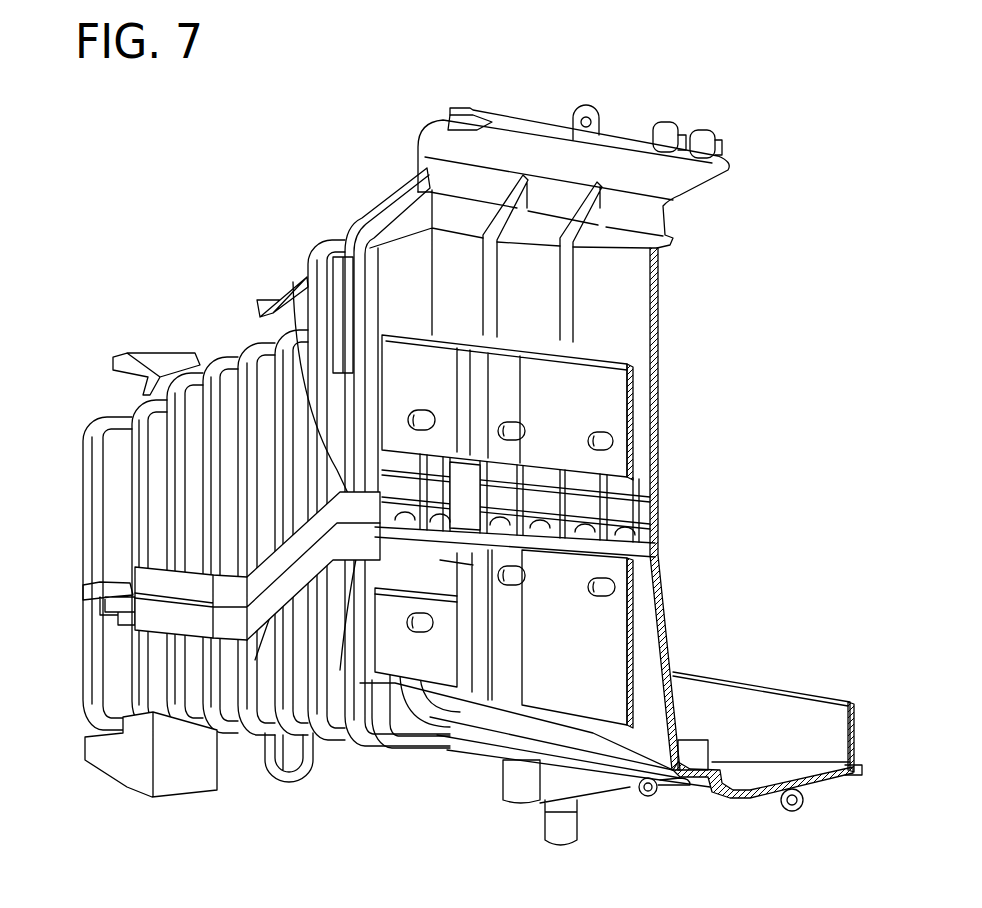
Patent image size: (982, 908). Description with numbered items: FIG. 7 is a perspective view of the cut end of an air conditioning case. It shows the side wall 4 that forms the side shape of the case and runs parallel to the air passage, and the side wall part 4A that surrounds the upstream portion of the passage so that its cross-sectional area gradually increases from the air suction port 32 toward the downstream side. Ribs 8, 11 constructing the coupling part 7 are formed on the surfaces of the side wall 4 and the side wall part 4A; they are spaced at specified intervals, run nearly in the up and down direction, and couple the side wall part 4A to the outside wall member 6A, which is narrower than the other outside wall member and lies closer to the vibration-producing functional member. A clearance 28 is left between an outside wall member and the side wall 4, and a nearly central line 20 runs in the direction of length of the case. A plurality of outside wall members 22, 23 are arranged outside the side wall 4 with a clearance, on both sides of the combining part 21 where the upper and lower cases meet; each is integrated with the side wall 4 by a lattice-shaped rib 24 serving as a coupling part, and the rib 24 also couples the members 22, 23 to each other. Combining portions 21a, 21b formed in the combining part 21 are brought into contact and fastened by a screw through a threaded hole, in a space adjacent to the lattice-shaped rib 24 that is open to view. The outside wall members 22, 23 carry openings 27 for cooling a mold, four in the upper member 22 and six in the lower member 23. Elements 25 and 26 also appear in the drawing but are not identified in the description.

The side wall 4 is at (645, 390).
The side wall part 4A is at (308, 280).
The outside wall member 6A is at (250, 735).
The coupling part 7 is at (283, 783).
The rib 8 is at (492, 288).
The rib 11 is at (570, 312).
The nearly central line 20 is at (372, 748).
The combining part 21 is at (837, 520).
The combining portion 21a is at (652, 548).
The combining portion 21b is at (660, 570).
The outside wall member 22 is at (620, 353).
The outside wall member 23 is at (620, 657).
The lattice-shaped rib 24 is at (657, 502).
The top cover 25 is at (688, 180).
The base tray 26 is at (677, 707).
The opening for cooling a mold 27 is at (613, 440).
The clearance 28 is at (645, 453).
The air suction port 32 is at (83, 540).